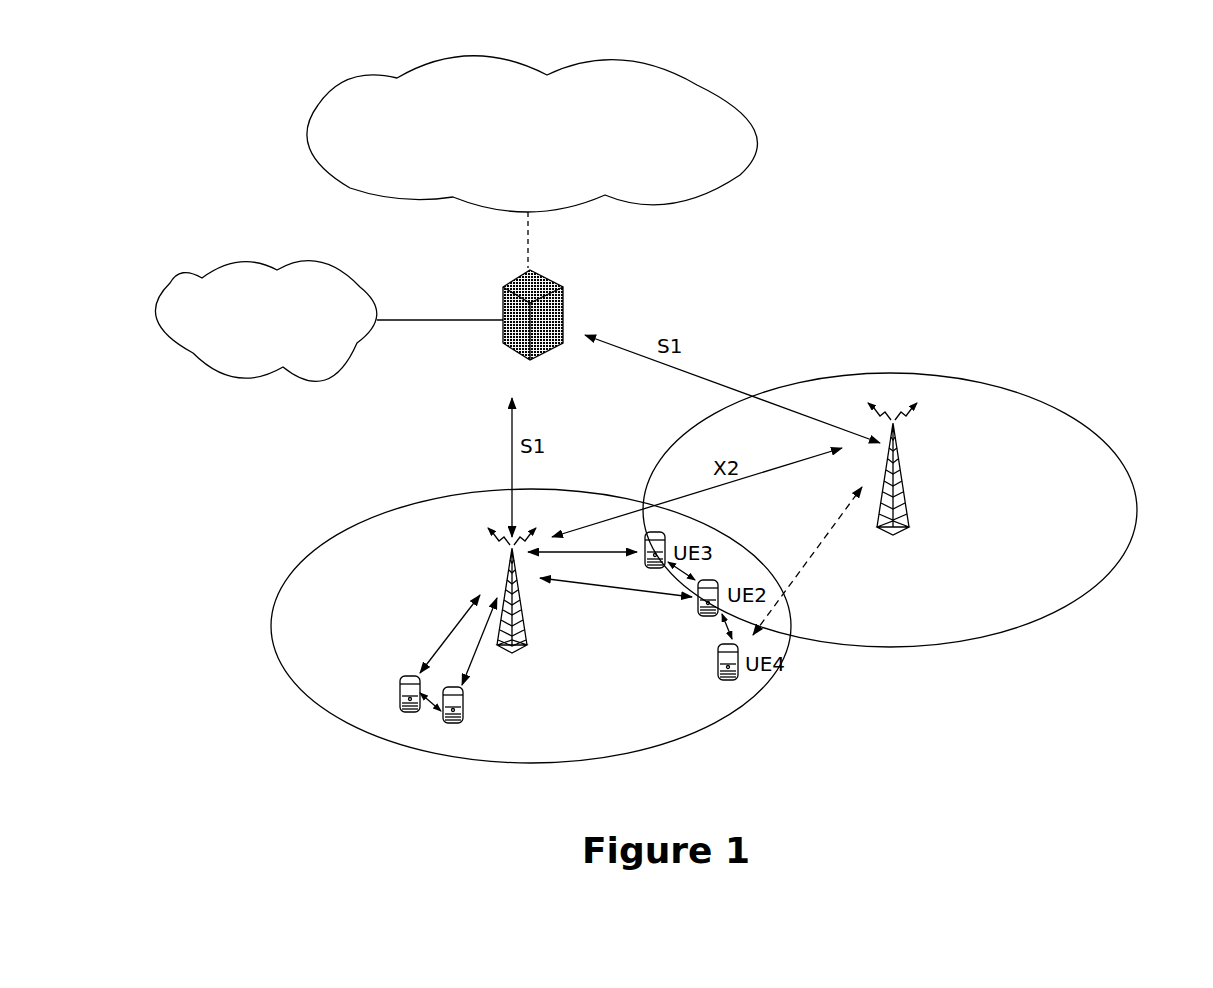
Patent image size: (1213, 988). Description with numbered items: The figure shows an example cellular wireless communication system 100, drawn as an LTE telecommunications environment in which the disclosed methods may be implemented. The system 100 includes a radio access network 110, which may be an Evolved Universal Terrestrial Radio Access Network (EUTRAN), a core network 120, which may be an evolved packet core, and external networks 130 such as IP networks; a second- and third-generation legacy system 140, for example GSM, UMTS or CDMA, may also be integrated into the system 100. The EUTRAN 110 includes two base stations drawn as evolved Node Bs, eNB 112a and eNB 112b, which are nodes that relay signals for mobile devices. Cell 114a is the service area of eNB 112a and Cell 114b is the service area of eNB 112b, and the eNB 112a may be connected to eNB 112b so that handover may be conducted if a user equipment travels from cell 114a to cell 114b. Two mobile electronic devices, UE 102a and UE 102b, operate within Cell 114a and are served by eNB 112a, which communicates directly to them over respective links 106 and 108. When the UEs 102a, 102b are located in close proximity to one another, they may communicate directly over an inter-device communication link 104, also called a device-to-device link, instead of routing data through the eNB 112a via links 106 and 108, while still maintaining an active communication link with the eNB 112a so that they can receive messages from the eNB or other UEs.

The cellular wireless communication system 100 is at (978, 118).
The external networks 130 is at (437, 60).
The 2G/3G systems 140 is at (193, 278).
The core network 120 is at (565, 300).
The radio access network 110 is at (510, 584).
The eNB 112a is at (509, 572).
The eNB 112b is at (898, 460).
The cell 114a is at (306, 695).
The cell 114b is at (1106, 576).
The user equipment 102a is at (400, 678).
The user equipment 102b is at (465, 709).
The inter-device communication link 104 is at (434, 707).
The link between UE 102a and eNB 112a 106 is at (455, 625).
The link between UE 102b and eNB 112a 108 is at (473, 663).